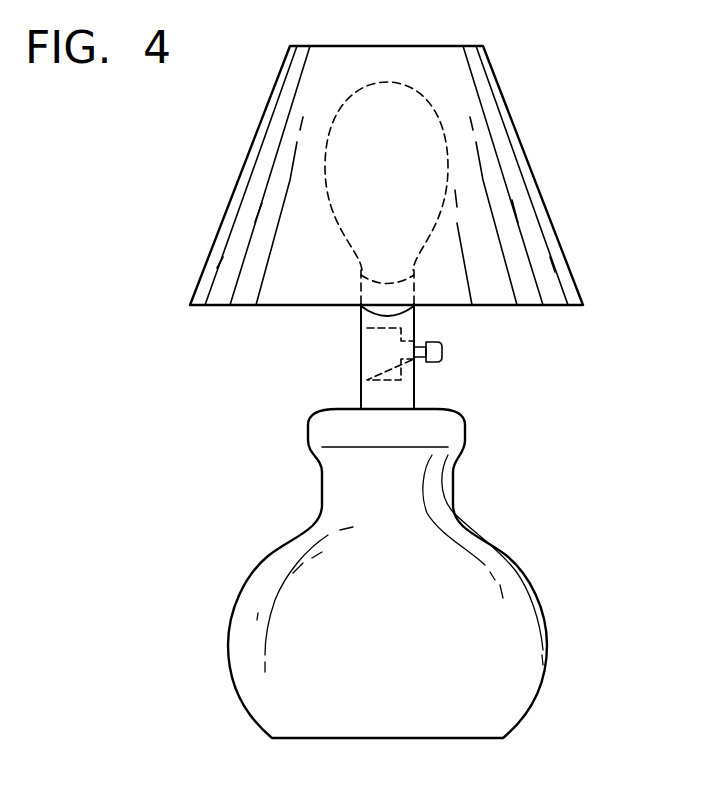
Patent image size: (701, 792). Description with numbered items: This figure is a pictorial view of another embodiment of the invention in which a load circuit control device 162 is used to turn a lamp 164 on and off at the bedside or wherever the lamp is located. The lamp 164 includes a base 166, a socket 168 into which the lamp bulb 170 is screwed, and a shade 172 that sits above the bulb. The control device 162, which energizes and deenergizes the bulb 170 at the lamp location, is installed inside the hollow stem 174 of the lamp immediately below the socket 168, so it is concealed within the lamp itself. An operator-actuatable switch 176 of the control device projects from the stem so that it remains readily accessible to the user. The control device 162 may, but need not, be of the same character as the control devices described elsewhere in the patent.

The switch 162 is at (358, 367).
The lamp assembly 164 is at (195, 173).
The base 166 is at (525, 573).
The socket 168 is at (360, 290).
The bulb 170 is at (453, 170).
The shade 172 is at (497, 75).
The socket housing 174 is at (417, 388).
The switch knob 176 is at (443, 350).